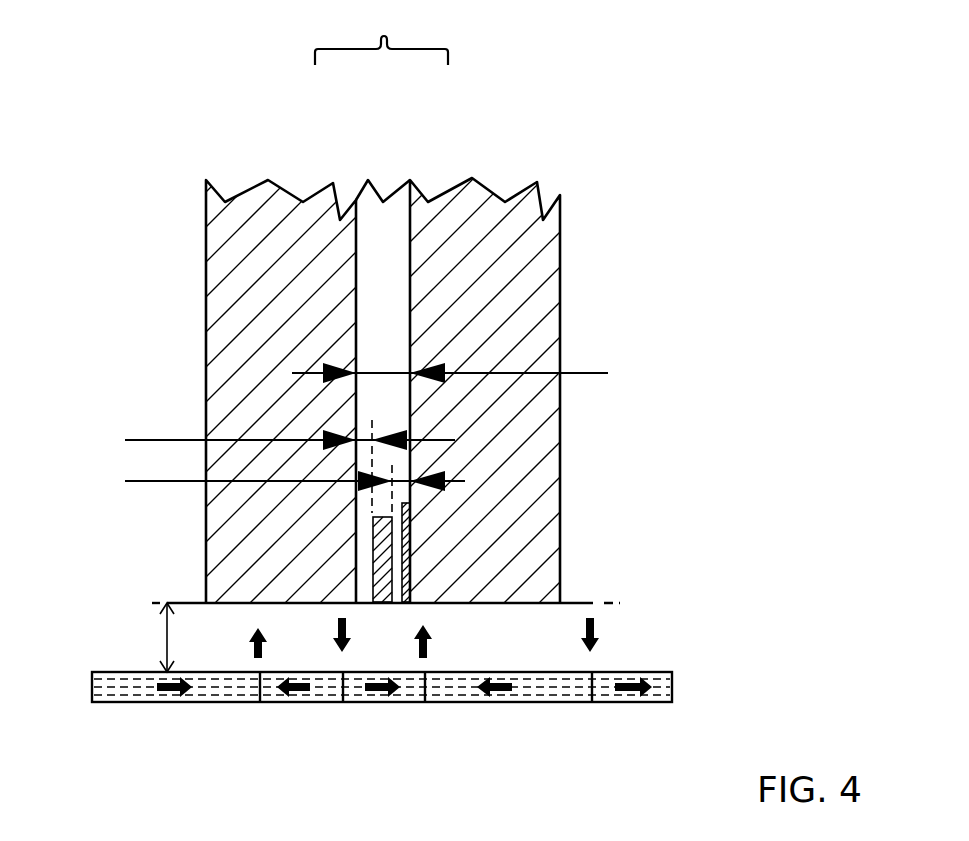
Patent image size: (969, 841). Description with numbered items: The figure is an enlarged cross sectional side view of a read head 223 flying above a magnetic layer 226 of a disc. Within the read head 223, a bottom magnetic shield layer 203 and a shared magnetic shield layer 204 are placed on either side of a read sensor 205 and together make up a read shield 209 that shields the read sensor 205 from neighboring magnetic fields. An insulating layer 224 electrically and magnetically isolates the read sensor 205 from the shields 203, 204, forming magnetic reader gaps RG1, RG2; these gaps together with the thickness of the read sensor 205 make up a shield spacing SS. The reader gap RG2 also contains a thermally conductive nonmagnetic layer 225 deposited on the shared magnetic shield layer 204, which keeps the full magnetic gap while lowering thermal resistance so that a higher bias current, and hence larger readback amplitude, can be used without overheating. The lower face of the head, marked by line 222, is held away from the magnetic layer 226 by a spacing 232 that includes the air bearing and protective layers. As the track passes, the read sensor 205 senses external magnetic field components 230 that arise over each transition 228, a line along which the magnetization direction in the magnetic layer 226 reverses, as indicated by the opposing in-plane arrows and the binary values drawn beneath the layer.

The bottom magnetic shield layer 203 is at (257, 182).
The shared magnetic shield layer 204 is at (510, 192).
The read shield 209 is at (381, 32).
The insulating layer 224 is at (372, 220).
The read head 223 is at (630, 201).
The read sensor 205 is at (402, 515).
The thermally conductive nonmagnetic layer 225 is at (402, 550).
The air bearing surface 222 is at (577, 602).
The external magnetic field components 230 is at (593, 630).
The spacing 232 is at (140, 632).
The magnetic layer 226 is at (705, 670).
The transition 228 is at (592, 702).
The shield spacing SS is at (475, 378).
The magnetic reader gap RG1 is at (256, 466).
The magnetic reader gap RG2 is at (261, 489).